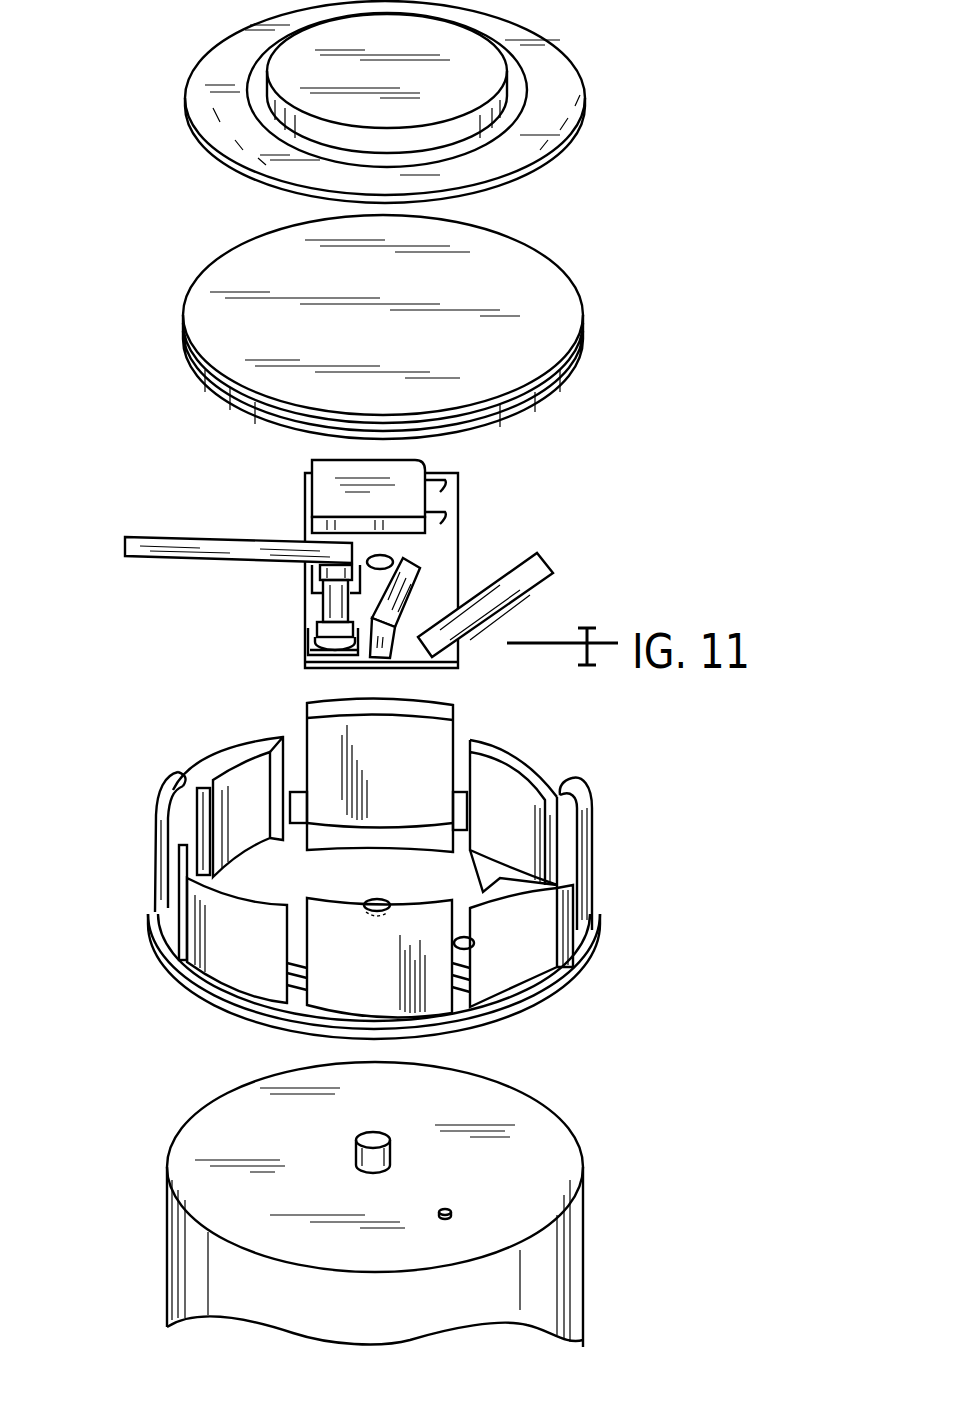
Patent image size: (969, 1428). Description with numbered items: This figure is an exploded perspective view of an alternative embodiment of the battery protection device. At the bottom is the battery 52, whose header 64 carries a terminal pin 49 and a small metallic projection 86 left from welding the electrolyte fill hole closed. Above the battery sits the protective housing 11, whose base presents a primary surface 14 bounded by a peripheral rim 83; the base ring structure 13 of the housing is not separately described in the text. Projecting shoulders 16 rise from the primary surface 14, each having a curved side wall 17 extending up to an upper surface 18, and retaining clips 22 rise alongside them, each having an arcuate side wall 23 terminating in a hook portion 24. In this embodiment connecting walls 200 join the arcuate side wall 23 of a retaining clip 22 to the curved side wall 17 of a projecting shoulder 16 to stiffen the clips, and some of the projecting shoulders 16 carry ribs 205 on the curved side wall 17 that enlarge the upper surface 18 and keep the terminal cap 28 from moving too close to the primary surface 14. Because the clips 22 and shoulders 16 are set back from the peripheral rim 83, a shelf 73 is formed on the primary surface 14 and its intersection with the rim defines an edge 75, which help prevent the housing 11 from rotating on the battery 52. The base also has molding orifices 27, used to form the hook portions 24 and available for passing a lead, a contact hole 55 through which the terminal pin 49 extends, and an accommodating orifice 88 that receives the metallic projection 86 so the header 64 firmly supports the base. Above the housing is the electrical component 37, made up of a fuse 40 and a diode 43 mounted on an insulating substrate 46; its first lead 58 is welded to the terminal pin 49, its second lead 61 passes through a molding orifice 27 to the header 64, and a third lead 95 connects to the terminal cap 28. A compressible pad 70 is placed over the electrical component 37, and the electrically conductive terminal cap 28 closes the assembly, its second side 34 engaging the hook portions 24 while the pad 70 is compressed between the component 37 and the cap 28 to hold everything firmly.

The protective housing 11 is at (382, 856).
The base ring 13 is at (412, 973).
The primary surface 14 is at (292, 888).
The projecting shoulder 16 is at (222, 955).
The curved side wall 17 is at (240, 770).
The upper surface 18 is at (238, 760).
The retaining clip 22 is at (382, 772).
The arcuate side wall 23 is at (450, 737).
The hook portion 24 is at (178, 773).
The molding orifice 27 is at (333, 843).
The terminal cap 28 is at (590, 95).
The second side 34 is at (550, 67).
The electrical component 37 is at (377, 555).
The fuse 40 is at (333, 607).
The diode 43 is at (330, 470).
The insulating substrate 46 is at (460, 488).
The terminal pin 49 is at (380, 1140).
The battery 52 is at (440, 1308).
The contact hole 55 is at (395, 873).
The first lead 58 is at (403, 560).
The second lead 61 is at (540, 560).
The header 64 is at (334, 1204).
The compressible pad 70 is at (403, 352).
The shelf 73 is at (200, 975).
The edge 75 is at (520, 1003).
The peripheral rim 83 is at (238, 1005).
The metallic projection 86 is at (450, 1212).
The accommodating orifice 88 is at (463, 935).
The third lead 95 is at (224, 540).
The connecting wall 200 is at (298, 817).
The rib 205 is at (292, 790).